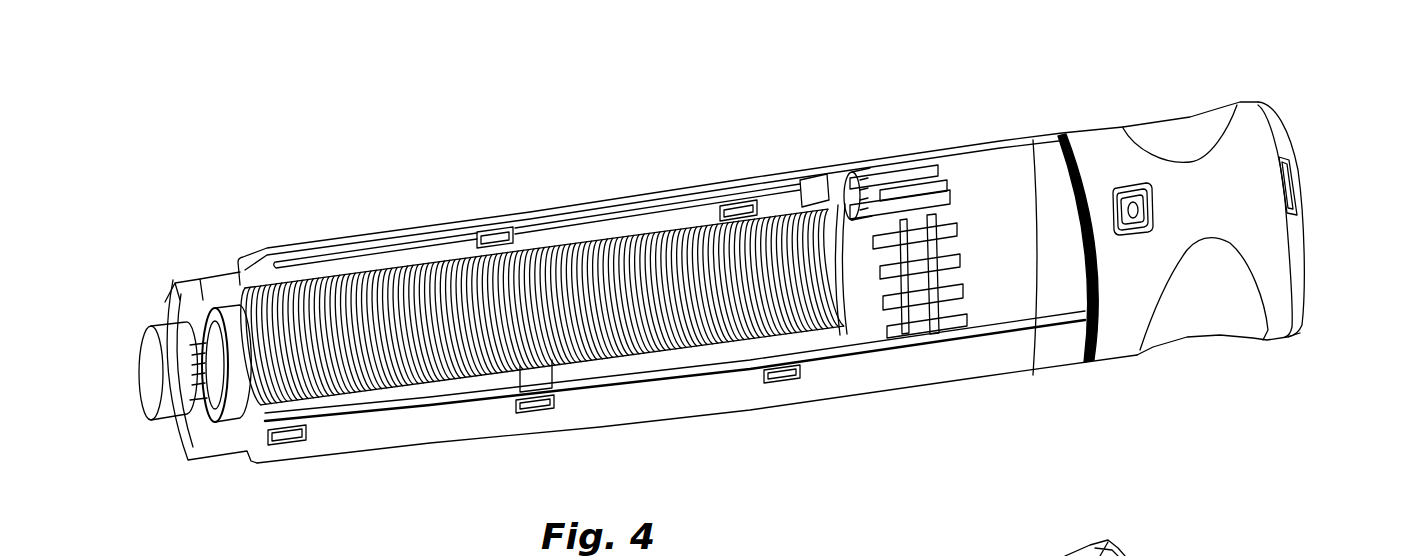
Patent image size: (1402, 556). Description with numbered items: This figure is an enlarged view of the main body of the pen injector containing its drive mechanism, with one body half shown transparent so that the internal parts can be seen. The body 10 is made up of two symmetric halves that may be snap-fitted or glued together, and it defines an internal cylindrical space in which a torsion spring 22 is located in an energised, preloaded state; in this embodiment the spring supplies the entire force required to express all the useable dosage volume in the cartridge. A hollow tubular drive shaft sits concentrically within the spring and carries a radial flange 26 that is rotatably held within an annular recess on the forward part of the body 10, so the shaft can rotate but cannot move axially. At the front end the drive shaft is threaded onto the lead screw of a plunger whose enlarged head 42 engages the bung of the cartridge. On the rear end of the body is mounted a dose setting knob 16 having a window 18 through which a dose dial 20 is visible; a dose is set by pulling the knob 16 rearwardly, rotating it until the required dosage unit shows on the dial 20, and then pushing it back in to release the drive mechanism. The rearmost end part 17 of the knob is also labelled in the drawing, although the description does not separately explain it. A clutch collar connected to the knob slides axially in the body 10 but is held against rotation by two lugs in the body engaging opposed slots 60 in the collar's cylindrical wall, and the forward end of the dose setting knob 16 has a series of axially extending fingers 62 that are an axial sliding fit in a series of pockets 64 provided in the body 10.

The body 10 is at (713, 392).
The dose setting knob 16 is at (1281, 298).
The end cap 17 is at (1299, 262).
The window 18 is at (1122, 186).
The dose dial 20 is at (1133, 190).
The torsion spring 22 is at (390, 385).
The radial flange 26 is at (221, 323).
The enlarged head 42 is at (170, 395).
The slots 60 is at (840, 203).
The axially extending fingers 62 is at (953, 284).
The pockets 64 is at (897, 331).